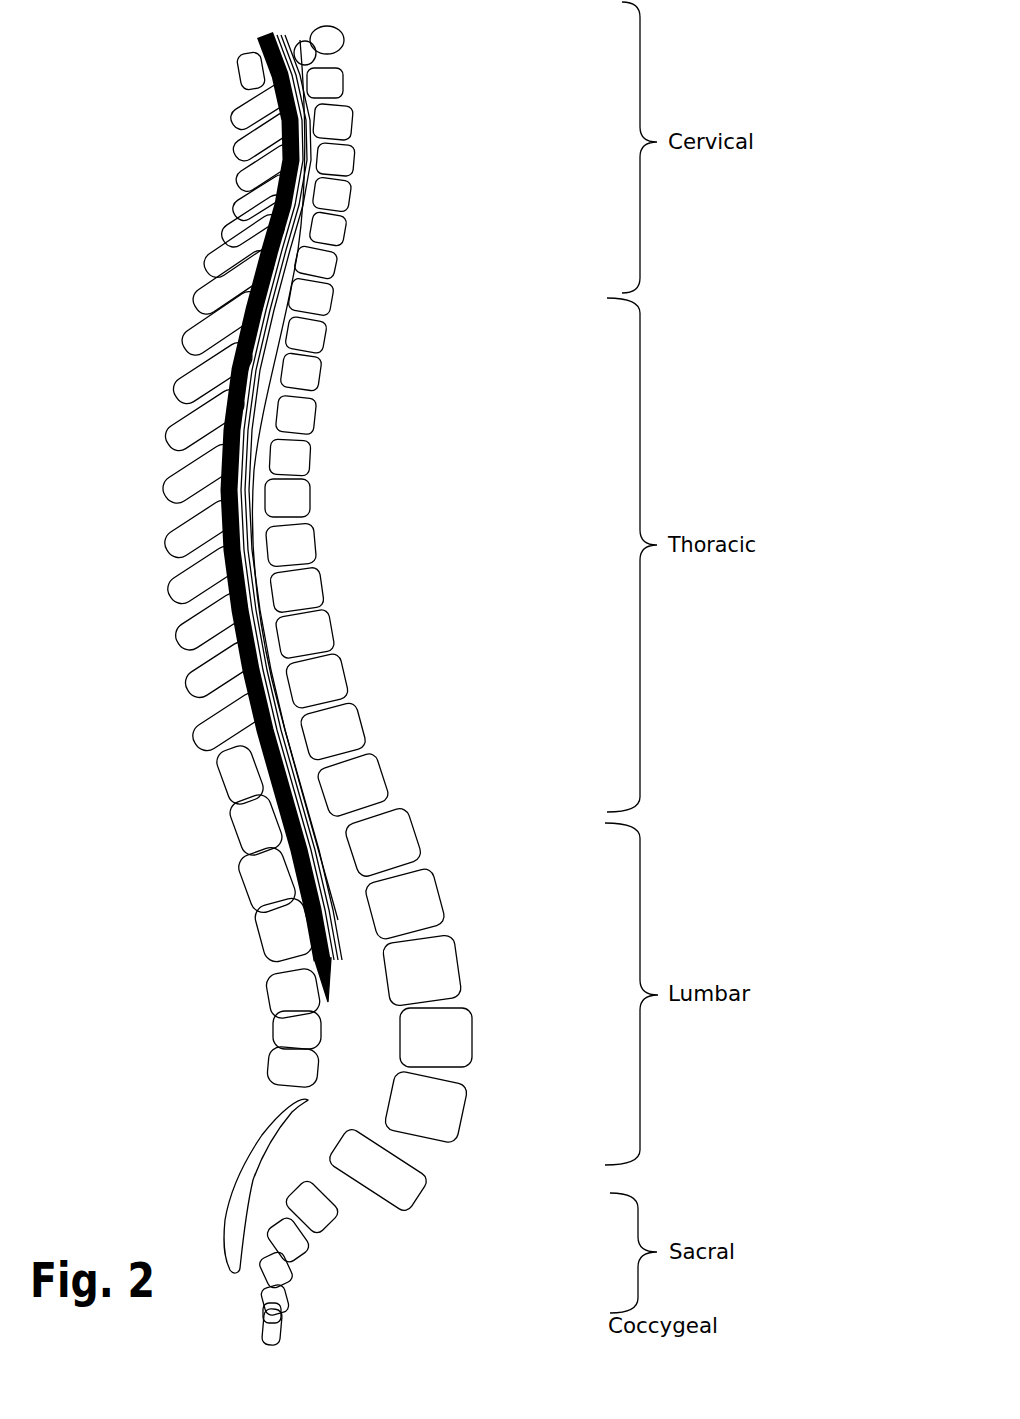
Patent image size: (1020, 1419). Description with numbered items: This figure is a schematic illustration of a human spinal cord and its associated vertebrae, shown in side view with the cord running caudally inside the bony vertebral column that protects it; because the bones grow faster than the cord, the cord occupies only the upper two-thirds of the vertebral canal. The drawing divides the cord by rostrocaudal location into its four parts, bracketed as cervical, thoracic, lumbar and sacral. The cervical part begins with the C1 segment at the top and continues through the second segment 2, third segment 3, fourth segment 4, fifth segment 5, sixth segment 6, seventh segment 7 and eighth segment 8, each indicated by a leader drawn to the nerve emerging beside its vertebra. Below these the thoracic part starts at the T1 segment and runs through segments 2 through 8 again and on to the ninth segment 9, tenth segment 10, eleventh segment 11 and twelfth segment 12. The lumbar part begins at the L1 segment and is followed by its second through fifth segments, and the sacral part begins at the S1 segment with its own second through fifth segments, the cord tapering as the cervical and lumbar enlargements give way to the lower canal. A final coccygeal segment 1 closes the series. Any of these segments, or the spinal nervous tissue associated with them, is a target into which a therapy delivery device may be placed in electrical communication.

The C1 spinal cord segment C1 is at (318, 30).
The second spinal cord segment 2 is at (295, 62).
The third spinal cord segment 3 is at (307, 102).
The fourth spinal cord segment 4 is at (312, 141).
The fifth spinal cord segment 5 is at (310, 177).
The sixth spinal cord segment 6 is at (305, 212).
The seventh spinal cord segment 7 is at (300, 247).
The eighth spinal cord segment 8 is at (290, 278).
The ninth thoracic spinal cord segment 9 is at (270, 656).
The tenth thoracic spinal cord segment 10 is at (278, 706).
The eleventh thoracic spinal cord segment 11 is at (290, 757).
The twelfth thoracic spinal cord segment 12 is at (310, 812).
The T1 spinal cord segment T1 is at (285, 315).
The L1 spinal cord segment L1 is at (325, 872).
The S1 spinal cord segment S1 is at (288, 710).
The coccygeal nerve 1 is at (268, 710).